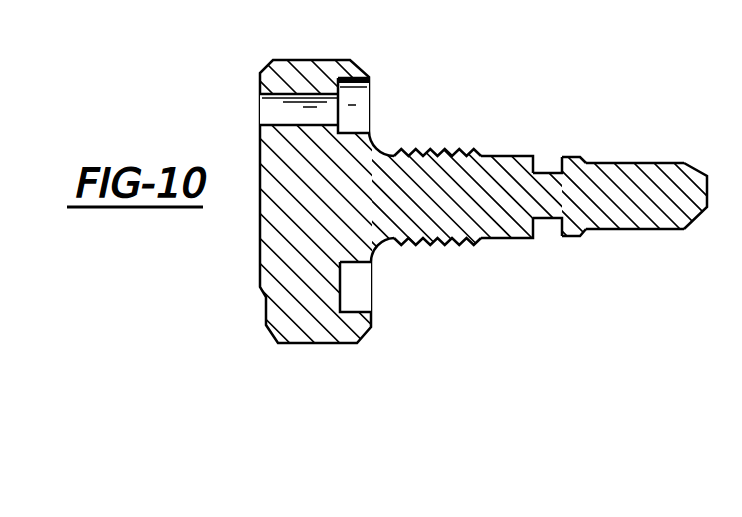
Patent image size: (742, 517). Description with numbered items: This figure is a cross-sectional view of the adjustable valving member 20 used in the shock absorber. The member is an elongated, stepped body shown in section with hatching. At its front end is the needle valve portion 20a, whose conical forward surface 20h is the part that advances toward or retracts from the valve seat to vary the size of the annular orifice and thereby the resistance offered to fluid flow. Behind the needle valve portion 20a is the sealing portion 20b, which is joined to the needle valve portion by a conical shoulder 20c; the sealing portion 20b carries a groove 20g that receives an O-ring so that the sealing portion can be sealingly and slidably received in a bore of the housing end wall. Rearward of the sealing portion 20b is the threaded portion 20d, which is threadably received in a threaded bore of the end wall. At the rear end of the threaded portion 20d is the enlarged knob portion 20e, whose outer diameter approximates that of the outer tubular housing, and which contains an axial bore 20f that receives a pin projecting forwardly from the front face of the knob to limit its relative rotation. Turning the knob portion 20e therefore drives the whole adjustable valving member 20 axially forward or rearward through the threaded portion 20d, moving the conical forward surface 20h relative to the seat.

The adjustable valving member 20 is at (240, 251).
The front needle valve portion 20a is at (667, 162).
The sealing portion 20b is at (505, 155).
The conical shoulder 20c is at (577, 157).
The threaded portion 20d is at (433, 150).
The knob portion 20e is at (337, 60).
The axial bore 20f is at (262, 112).
The groove 20g is at (538, 220).
The conical forward surface 20h is at (695, 225).